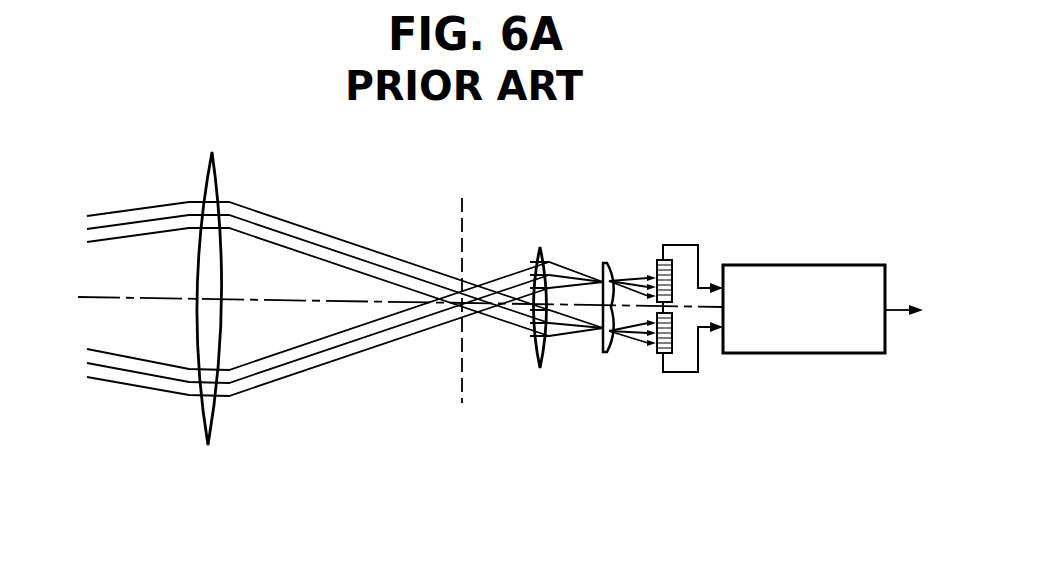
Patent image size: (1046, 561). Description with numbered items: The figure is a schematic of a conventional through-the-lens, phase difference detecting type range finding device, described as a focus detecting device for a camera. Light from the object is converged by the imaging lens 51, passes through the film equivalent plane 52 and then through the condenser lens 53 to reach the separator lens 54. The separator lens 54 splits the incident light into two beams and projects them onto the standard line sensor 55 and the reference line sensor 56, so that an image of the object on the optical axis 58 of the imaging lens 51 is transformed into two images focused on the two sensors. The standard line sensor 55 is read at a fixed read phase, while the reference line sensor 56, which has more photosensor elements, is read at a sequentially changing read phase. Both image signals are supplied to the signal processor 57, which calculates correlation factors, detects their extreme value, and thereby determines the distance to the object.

The imaging lens 51 is at (220, 187).
The film equivalent plane 52 is at (464, 229).
The condenser lens 53 is at (538, 357).
The separator lens 54 is at (610, 353).
The standard line sensor 55 is at (660, 258).
The reference line sensor 56 is at (662, 360).
The signal processor 57 is at (773, 265).
The optical axis 58 is at (100, 297).